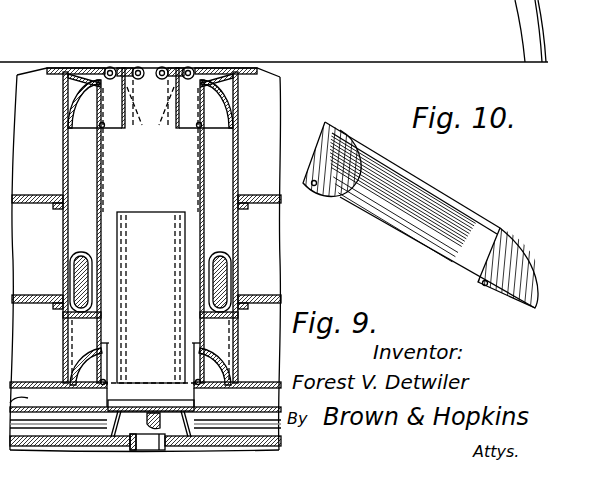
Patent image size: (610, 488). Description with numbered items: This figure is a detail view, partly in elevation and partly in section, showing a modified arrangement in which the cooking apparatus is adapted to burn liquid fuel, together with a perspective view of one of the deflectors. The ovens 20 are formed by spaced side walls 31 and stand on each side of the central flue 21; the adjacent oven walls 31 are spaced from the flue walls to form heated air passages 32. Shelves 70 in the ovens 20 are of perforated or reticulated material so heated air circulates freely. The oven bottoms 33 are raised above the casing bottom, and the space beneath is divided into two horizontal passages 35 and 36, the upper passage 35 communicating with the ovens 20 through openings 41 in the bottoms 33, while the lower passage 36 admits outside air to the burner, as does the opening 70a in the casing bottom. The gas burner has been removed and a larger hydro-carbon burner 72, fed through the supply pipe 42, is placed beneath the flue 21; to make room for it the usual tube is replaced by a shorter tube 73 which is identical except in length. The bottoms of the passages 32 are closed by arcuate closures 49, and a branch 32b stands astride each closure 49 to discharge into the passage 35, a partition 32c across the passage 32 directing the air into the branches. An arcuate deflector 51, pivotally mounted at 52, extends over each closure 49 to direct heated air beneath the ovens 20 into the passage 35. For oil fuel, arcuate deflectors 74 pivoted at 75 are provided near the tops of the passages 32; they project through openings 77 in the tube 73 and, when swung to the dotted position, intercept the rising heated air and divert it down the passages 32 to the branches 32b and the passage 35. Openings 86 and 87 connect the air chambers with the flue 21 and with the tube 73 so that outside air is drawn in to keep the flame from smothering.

In FIG. 9, the oven 20 is at (145, 260).
In FIG. 9, the flue 21 is at (102, 194).
In FIG. 9, the side wall 31 is at (66, 152).
In FIG. 9, the heated air passage 32 is at (70, 253).
In FIG. 9, the branch 32b is at (83, 264).
In FIG. 9, the partition 32c is at (50, 313).
In FIG. 9, the oven bottom 33 is at (145, 401).
In FIG. 9, the horizontal passage 35 is at (275, 390).
In FIG. 9, the horizontal passage 36 is at (264, 428).
In FIG. 9, the opening 41 is at (53, 382).
In FIG. 9, the supply pipe 42 is at (57, 428).
In FIG. 9, the closure 49 is at (98, 344).
In FIG. 9, the deflector 51 is at (73, 358).
In FIG. 10, the deflector 51 is at (383, 157).
In FIG. 9, the pivot 52 is at (196, 380).
In FIG. 10, the pivot 52 is at (315, 187).
In FIG. 9, the shelf 70 is at (42, 204).
In FIG. 9, the opening 70a is at (162, 436).
In FIG. 9, the burner 72 is at (157, 212).
In FIG. 9, the tube 73 is at (140, 66).
In FIG. 9, the deflector 74 is at (72, 101).
In FIG. 9, the pivot 75 is at (196, 128).
In FIG. 9, the opening 77 is at (117, 73).
In FIG. 9, the opening 86 is at (104, 70).
In FIG. 9, the opening 87 is at (162, 66).